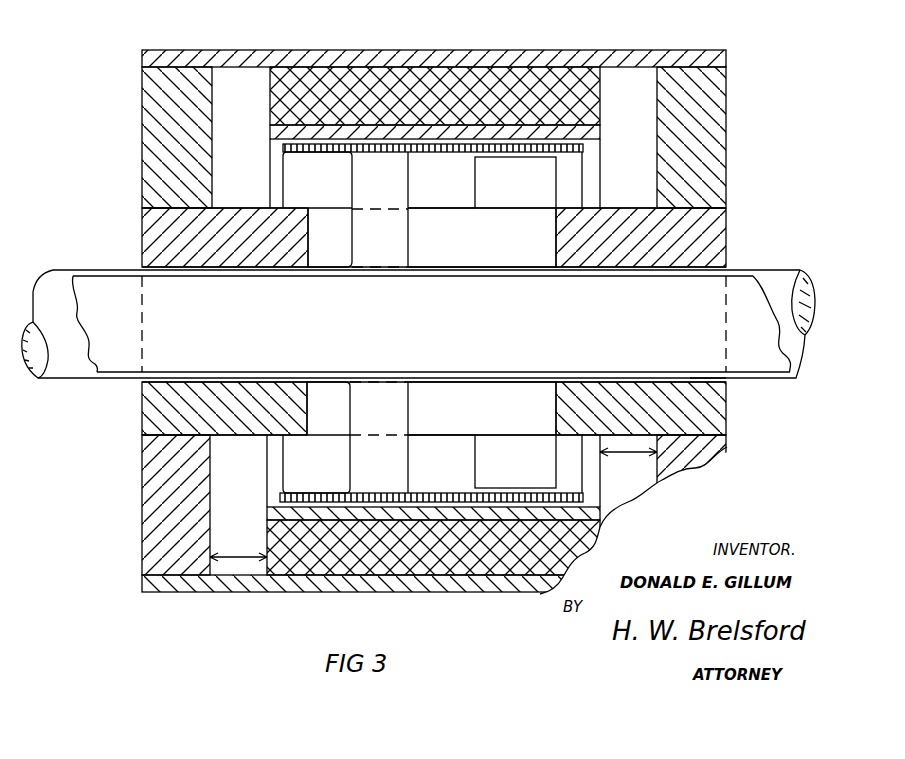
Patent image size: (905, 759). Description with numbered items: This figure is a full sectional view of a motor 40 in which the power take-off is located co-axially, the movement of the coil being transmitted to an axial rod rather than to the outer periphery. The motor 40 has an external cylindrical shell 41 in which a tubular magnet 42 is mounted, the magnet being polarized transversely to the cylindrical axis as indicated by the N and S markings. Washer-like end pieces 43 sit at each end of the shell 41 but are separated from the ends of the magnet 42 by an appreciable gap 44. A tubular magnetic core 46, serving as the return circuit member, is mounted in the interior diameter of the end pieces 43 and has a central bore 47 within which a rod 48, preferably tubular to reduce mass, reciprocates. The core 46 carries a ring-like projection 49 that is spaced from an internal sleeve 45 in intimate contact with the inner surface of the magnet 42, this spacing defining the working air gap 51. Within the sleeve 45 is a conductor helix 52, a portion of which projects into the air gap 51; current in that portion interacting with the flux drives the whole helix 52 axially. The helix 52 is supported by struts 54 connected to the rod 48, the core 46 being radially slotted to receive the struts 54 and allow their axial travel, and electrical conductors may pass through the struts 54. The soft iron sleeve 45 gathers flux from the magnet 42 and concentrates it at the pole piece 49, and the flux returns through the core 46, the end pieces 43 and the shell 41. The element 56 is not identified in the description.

The motor 40 is at (388, 632).
The external cylindrical shell 41 is at (313, 52).
The tubular magnet 42 is at (551, 82).
The washer-like end pieces 43 is at (150, 125).
The gap 44 is at (630, 457).
The internal sleeve 45 is at (278, 513).
The tubular magnetic core 46 is at (715, 228).
The central bore 47 is at (716, 371).
The rod 48 is at (788, 367).
The ring-like projection 49 is at (490, 185).
The air gap 51 is at (557, 153).
The conductor helix 52 is at (298, 149).
The struts 54 is at (394, 177).
The core block 56 is at (482, 322).